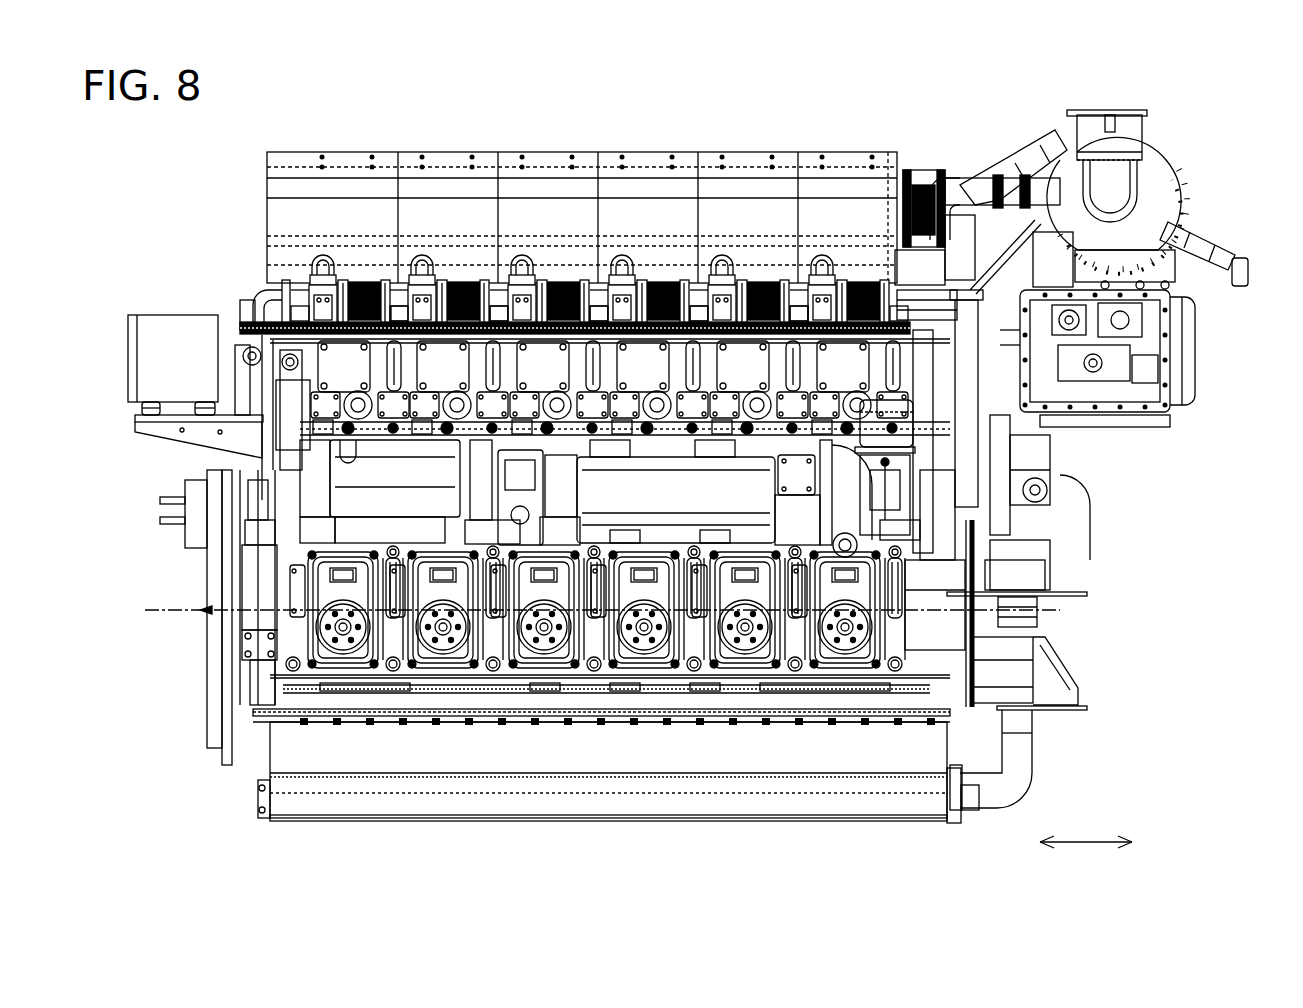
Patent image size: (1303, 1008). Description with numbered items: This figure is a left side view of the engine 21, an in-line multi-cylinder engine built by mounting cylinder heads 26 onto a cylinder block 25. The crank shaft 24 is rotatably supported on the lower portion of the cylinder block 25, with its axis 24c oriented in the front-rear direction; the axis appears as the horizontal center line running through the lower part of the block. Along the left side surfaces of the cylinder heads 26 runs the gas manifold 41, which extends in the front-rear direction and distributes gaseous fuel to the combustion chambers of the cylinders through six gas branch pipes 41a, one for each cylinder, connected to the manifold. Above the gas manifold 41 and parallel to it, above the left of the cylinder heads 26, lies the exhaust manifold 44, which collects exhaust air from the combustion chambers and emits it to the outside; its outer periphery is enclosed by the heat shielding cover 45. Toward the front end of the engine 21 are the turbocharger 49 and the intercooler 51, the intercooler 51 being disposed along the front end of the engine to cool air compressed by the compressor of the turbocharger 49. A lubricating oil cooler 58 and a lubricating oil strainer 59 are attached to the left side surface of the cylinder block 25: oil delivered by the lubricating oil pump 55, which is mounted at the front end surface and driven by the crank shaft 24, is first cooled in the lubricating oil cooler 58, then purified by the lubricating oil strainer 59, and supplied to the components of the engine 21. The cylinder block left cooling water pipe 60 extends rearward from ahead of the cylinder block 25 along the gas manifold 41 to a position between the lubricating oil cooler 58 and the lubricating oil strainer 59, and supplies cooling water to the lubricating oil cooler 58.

The engine 21 is at (685, 464).
The crank shaft 24 is at (240, 680).
The axis 24c is at (167, 612).
The cylinder block 25 is at (248, 400).
The cylinder heads 26 is at (582, 176).
The gas manifold 41 is at (558, 215).
The gas branch pipes 41a is at (415, 252).
The exhaust manifold 44 is at (357, 160).
The heat shielding cover 45 is at (536, 160).
The turbocharger 49 is at (1163, 180).
The intercooler 51 is at (1195, 405).
The lubricating oil pump 55 is at (1055, 673).
The lubricating oil cooler 58 is at (667, 487).
The lubricating oil strainer 59 is at (400, 477).
The cylinder block left cooling water pipe 60 is at (703, 310).